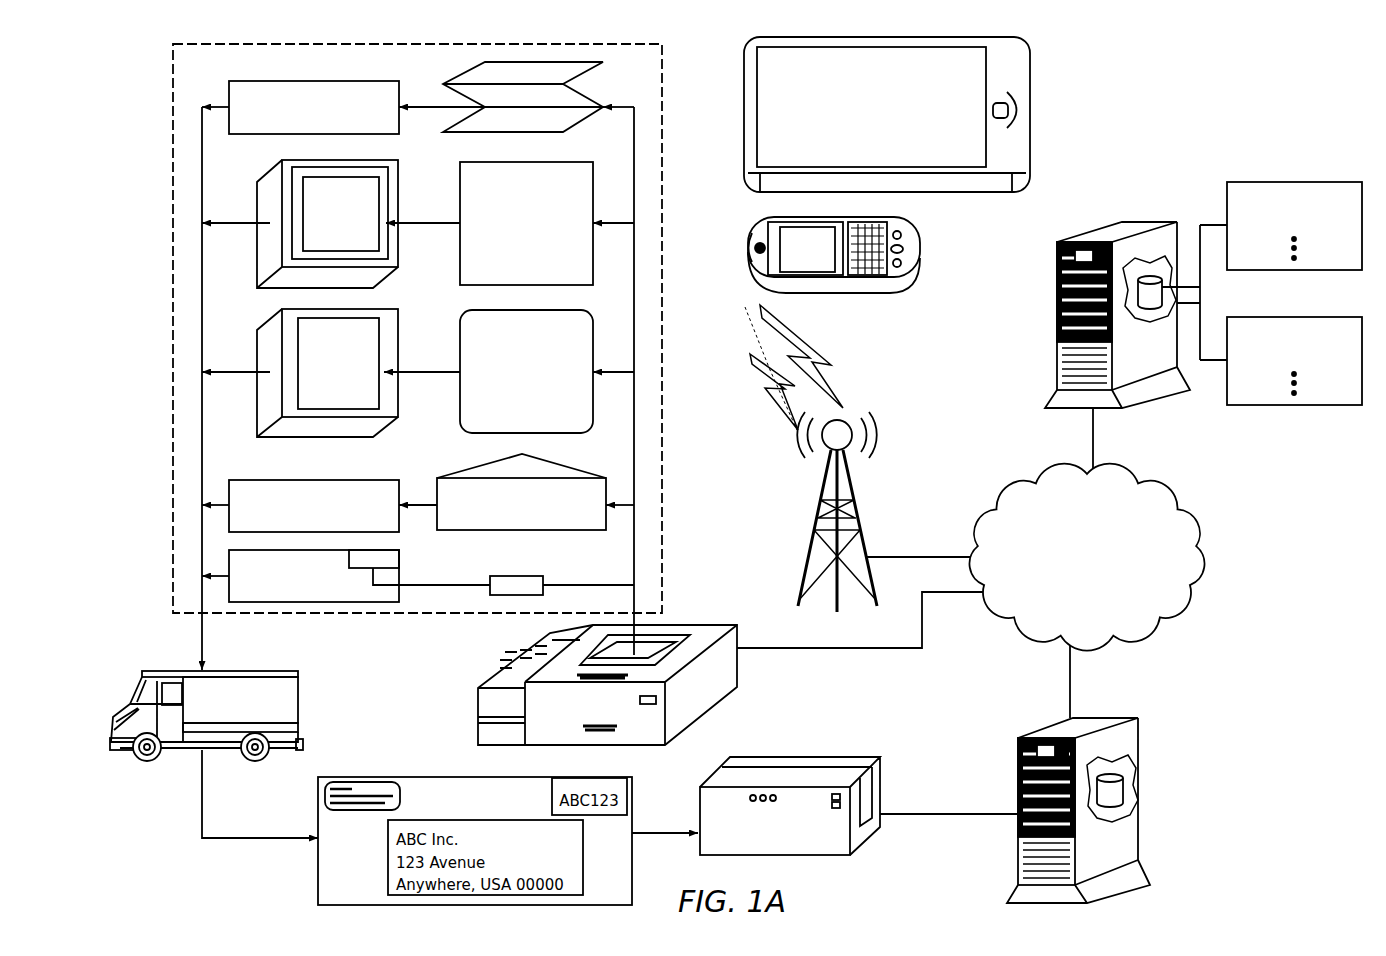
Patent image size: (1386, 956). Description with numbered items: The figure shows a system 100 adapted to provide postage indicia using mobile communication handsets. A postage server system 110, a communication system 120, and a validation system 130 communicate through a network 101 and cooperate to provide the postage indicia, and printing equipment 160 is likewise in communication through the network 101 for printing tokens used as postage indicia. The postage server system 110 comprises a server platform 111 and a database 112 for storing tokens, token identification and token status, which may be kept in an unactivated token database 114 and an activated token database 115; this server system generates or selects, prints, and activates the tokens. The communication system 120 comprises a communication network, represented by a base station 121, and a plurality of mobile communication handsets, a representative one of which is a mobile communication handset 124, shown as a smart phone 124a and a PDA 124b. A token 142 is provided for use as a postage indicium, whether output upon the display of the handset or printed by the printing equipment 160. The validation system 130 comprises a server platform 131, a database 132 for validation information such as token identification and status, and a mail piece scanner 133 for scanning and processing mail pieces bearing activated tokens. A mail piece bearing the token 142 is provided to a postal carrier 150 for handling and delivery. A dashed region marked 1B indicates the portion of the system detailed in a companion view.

The system detail shown in FIG. 1B is at (173, 323).
The system 100 is at (1088, 133).
The network 101 is at (1073, 567).
The postage server system 110 is at (1120, 208).
The server platform 111 is at (1120, 410).
The database 112 is at (1143, 292).
The unactivated token database 114 is at (1287, 270).
The activated token database 115 is at (1287, 405).
The communication system 120 is at (867, 400).
The base station 121 is at (858, 517).
The mobile communication handset 124 is at (732, 50).
The smart phone 124a is at (913, 277).
The PDA 124b is at (995, 190).
The validation system 130 is at (1147, 722).
The server platform 131 is at (1017, 872).
The database 132 is at (1123, 790).
The mail piece scanner 133 is at (838, 857).
The token 142 is at (817, 100).
The postal carrier 150 is at (300, 700).
The printing equipment 160 is at (700, 712).